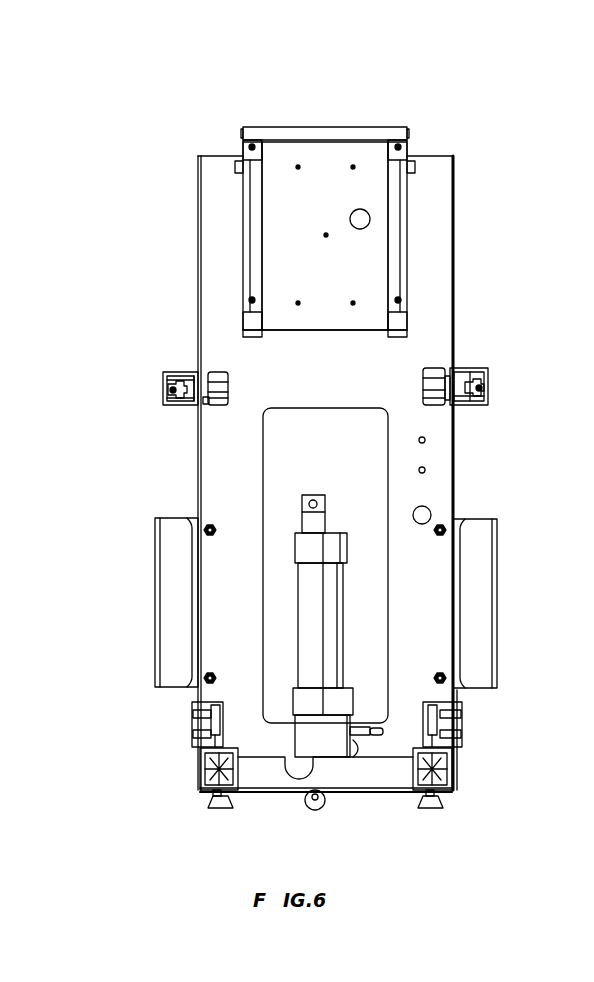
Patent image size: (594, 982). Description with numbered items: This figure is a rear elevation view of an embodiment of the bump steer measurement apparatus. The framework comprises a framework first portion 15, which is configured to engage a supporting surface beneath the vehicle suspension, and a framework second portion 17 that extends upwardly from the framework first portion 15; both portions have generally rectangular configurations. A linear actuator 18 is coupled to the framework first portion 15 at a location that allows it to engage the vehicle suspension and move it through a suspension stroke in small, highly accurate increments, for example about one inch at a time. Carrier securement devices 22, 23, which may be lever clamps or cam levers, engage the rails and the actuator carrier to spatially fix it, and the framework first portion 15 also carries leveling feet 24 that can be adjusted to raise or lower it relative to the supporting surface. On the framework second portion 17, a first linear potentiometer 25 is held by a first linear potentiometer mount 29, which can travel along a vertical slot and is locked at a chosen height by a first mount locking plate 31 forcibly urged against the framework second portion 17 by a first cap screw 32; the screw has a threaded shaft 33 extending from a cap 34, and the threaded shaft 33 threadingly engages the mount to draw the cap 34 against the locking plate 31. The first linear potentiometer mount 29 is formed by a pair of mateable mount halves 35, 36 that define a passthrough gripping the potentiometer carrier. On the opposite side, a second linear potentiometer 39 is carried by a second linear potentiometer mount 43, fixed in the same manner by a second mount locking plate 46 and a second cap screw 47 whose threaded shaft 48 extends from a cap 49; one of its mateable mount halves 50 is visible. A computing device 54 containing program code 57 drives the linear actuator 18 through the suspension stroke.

The framework first portion 15 is at (368, 773).
The framework second portion 17 is at (440, 627).
The linear actuator 18 is at (333, 530).
The carrier securement device 22 is at (457, 725).
The carrier securement device 23 is at (200, 727).
The leveling feet 24 is at (217, 812).
The first linear potentiometer 25 is at (498, 392).
The first linear potentiometer mount 29 is at (489, 359).
The first mount locking plate 31 is at (455, 360).
The first cap screw 32 is at (437, 360).
The threaded shaft 33 is at (443, 398).
The cap 34 is at (420, 393).
The mateable mount half 35 is at (460, 402).
The mateable mount half 36 is at (488, 406).
The second linear potentiometer 39 is at (161, 393).
The second linear potentiometer mount 43 is at (183, 366).
The second mount locking plate 46 is at (205, 370).
The second cap screw 47 is at (235, 379).
The threaded shaft 48 is at (213, 408).
The cap 49 is at (231, 403).
The mateable mount half 50 is at (168, 412).
The computing device 54 is at (358, 127).
The program code 57 is at (188, 410).